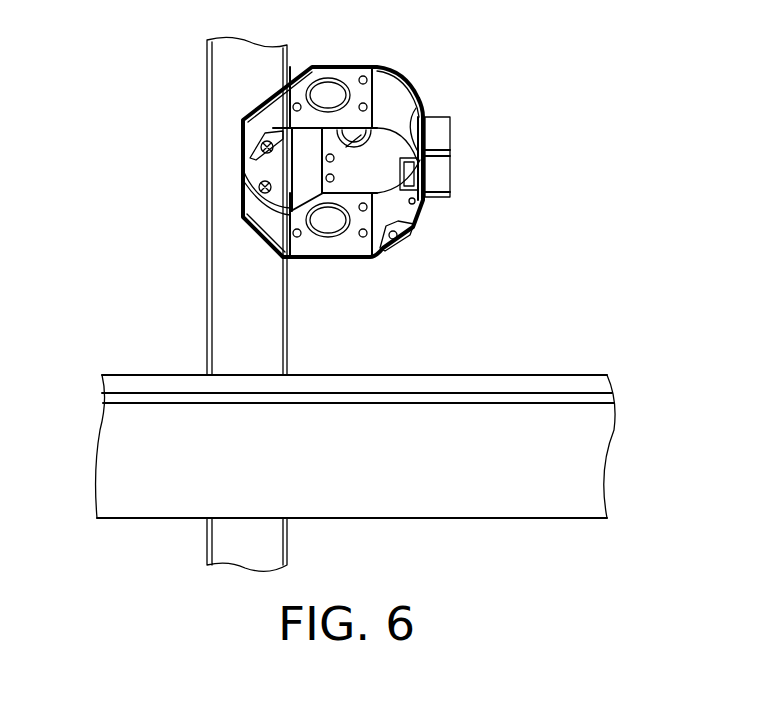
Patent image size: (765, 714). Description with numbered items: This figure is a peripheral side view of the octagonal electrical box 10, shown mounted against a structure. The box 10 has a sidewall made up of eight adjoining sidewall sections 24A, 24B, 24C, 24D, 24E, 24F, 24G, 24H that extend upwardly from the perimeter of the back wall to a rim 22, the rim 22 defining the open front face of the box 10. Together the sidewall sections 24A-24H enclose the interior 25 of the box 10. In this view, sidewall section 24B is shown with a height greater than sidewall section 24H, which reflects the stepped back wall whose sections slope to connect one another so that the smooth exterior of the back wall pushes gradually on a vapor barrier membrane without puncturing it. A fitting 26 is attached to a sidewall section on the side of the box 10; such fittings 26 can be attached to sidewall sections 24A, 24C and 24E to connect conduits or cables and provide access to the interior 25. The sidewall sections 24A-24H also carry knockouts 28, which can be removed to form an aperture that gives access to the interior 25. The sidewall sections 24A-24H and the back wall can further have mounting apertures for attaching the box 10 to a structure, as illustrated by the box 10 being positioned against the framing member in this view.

The octagonal electrical box 10 is at (480, 88).
The rim 22 is at (246, 233).
The sidewall section 24A is at (353, 77).
The sidewall section 24B is at (393, 92).
The sidewall section 24C is at (424, 205).
The sidewall section 24D is at (410, 228).
The sidewall section 24E is at (353, 257).
The sidewall section 24F is at (257, 247).
The sidewall section 24G is at (241, 183).
The sidewall section 24H is at (258, 118).
The interior 25 is at (307, 238).
The fitting 26 is at (450, 135).
The knockout 28 is at (330, 90).